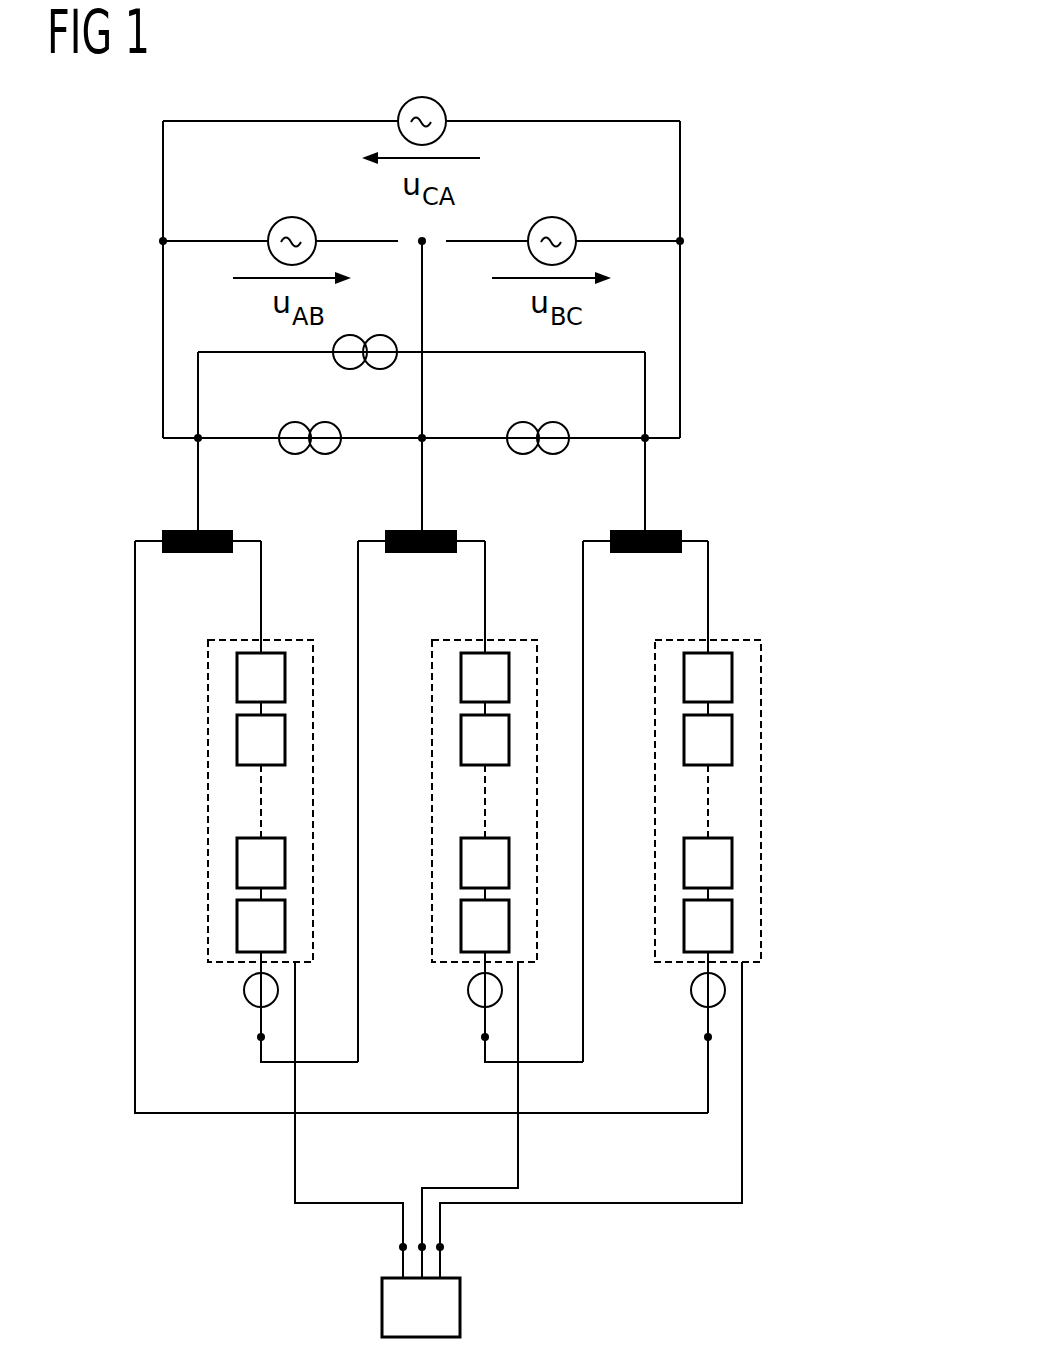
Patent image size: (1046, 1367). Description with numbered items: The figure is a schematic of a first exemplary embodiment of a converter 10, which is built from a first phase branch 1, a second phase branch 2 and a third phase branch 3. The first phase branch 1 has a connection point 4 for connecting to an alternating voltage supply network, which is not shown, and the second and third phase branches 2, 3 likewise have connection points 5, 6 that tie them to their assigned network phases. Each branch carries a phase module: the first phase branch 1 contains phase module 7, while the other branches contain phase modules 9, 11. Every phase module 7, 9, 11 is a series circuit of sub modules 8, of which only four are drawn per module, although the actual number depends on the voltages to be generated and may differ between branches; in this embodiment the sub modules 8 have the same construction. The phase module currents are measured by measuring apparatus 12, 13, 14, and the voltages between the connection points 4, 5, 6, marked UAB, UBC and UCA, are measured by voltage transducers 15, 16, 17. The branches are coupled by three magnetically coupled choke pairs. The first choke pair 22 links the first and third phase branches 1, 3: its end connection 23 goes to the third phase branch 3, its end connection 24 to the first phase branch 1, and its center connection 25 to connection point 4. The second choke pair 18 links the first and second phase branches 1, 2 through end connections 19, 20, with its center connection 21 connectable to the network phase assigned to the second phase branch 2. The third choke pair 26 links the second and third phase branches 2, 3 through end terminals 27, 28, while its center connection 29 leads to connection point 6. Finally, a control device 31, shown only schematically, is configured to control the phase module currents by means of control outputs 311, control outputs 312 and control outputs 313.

The first phase branch 1 is at (262, 573).
The second phase branch 2 is at (486, 573).
The third phase branch 3 is at (709, 573).
The connection point 4 is at (160, 241).
The connection point 5 is at (424, 244).
The connection point 6 is at (684, 241).
The phase module 7 is at (208, 785).
The sub module 8 is at (237, 738).
The phase module 9 is at (432, 785).
The converter 10 is at (178, 1216).
The phase module 11 is at (761, 785).
The measuring apparatus 12 is at (244, 990).
The measuring apparatus 13 is at (468, 990).
The measuring apparatus 14 is at (691, 990).
The voltage transducer 15 is at (335, 360).
The voltage transducer 16 is at (297, 455).
The voltage transducer 17 is at (525, 455).
The second choke pair 18 is at (445, 484).
The end connection 19 is at (389, 555).
The end connection 20 is at (456, 555).
The center connection 21 is at (420, 530).
The first choke pair 22 is at (212, 484).
The end connection 23 is at (165, 555).
The end connection 24 is at (232, 555).
The center connection 25 is at (195, 530).
The third choke pair 26 is at (667, 484).
The end terminal 27 is at (613, 555).
The end terminal 28 is at (681, 555).
The center connection 29 is at (643, 530).
The control device 31 is at (460, 1308).
The control outputs 311 is at (400, 1247).
The control outputs 312 is at (422, 1243).
The control outputs 313 is at (444, 1247).